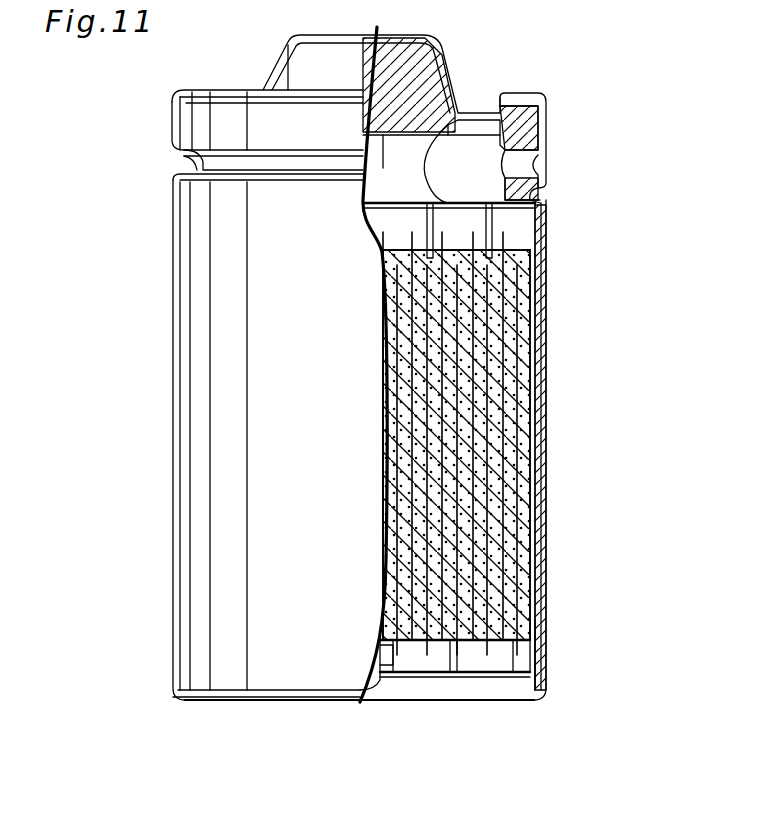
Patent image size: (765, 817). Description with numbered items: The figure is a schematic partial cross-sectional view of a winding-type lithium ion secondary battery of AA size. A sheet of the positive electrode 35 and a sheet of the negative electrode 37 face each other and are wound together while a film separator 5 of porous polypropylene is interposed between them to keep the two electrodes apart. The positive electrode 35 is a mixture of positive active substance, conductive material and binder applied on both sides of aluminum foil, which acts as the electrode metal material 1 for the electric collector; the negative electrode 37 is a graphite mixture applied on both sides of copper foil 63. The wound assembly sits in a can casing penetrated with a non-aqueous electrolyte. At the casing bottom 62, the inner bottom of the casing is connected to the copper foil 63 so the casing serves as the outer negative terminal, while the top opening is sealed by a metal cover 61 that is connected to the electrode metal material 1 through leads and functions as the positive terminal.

The electrode metal material 1 is at (522, 232).
The film separator 5 is at (522, 243).
The positive electrode 35 is at (433, 553).
The negative electrode 37 is at (462, 452).
The metal cover 61 is at (440, 46).
The can bottom 62 is at (296, 702).
The copper foil 63 is at (490, 676).